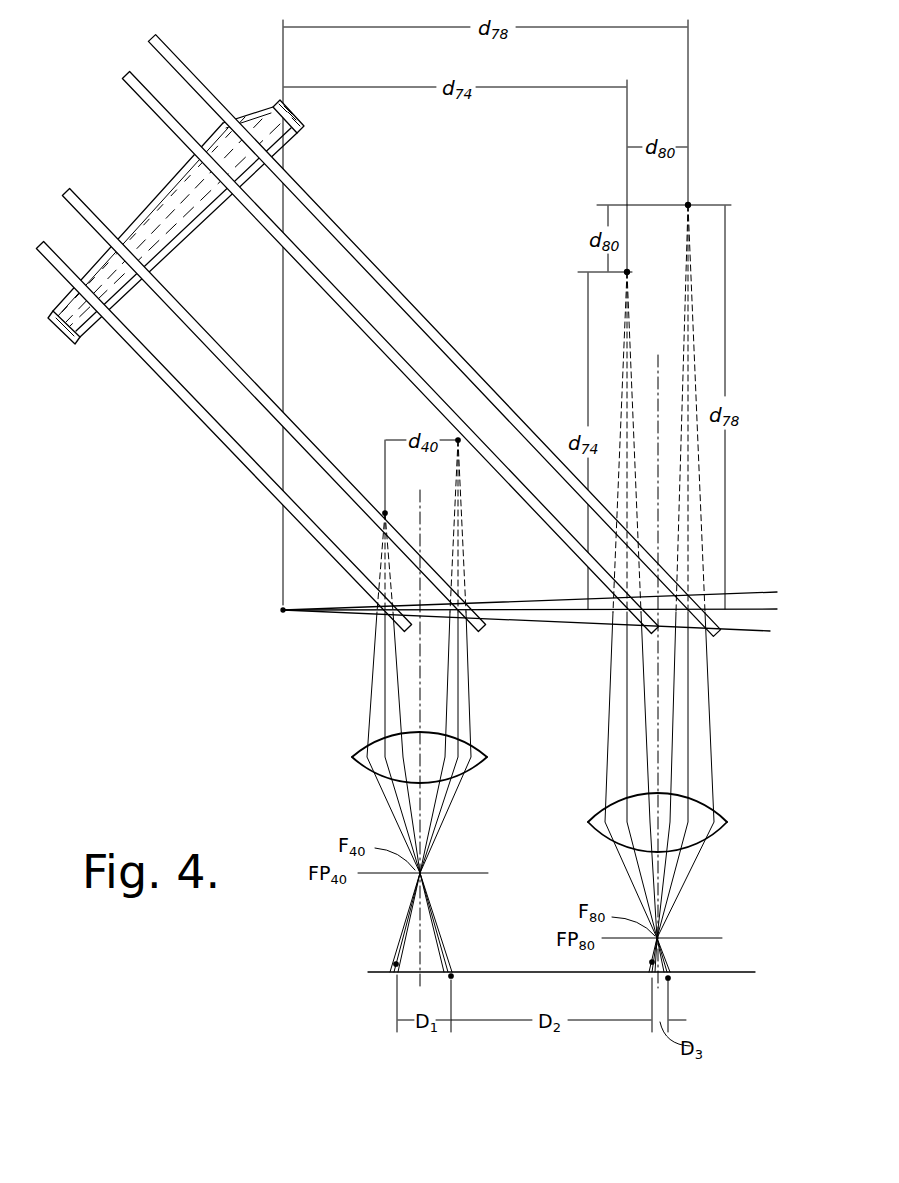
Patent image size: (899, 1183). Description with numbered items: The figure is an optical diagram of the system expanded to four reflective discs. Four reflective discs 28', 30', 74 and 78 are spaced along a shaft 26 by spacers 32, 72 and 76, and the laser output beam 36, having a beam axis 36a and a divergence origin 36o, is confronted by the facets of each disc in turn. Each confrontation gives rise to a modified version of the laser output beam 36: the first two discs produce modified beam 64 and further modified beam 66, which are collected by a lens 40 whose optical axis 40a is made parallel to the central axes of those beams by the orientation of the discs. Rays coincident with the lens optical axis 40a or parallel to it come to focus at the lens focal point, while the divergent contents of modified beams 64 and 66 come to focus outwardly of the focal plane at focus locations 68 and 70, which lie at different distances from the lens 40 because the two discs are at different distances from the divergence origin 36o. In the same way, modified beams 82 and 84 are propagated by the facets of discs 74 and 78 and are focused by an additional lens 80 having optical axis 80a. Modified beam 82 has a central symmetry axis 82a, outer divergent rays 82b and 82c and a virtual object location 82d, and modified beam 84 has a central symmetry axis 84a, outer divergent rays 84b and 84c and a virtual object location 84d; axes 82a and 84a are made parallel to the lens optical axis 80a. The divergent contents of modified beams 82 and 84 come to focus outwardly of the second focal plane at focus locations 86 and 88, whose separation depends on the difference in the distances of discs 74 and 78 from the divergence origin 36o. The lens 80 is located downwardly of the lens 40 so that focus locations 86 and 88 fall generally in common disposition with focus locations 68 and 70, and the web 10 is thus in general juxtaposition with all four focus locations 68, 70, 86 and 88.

The web 10 is at (722, 973).
The shaft 26 is at (293, 138).
The reflective disc 28' is at (223, 437).
The reflective disc 30' is at (273, 410).
The spacer 32 is at (133, 303).
The laser output beam 36 is at (332, 618).
The divergence origin 36o is at (283, 610).
The laser output beam axis 36a is at (527, 604).
The lens 40 is at (370, 764).
The optical axis of lens 40a is at (424, 502).
The modified beam 64 is at (368, 687).
The further modified beam 66 is at (473, 677).
The focus location 68 is at (453, 978).
The focus location 70 is at (394, 962).
The spacer 72 is at (200, 235).
The reflective disc 74 is at (392, 356).
The spacer 76 is at (223, 123).
The reflective disc 78 is at (428, 325).
The lens 80 is at (603, 832).
The optical axis of lens 80a is at (658, 360).
The modified beam 82 is at (607, 622).
The central symmetry axis 82a is at (627, 690).
The outer divergent ray 82b is at (613, 714).
The outer divergent ray 82c is at (641, 663).
The virtual object location 82d is at (629, 271).
The modified beam 84 is at (710, 588).
The central symmetry axis 84a is at (692, 698).
The outer divergent ray 84b is at (675, 672).
The outer divergent ray 84c is at (710, 723).
The virtual object location 84d is at (690, 204).
The focus location 86 is at (669, 980).
The focus location 88 is at (650, 962).